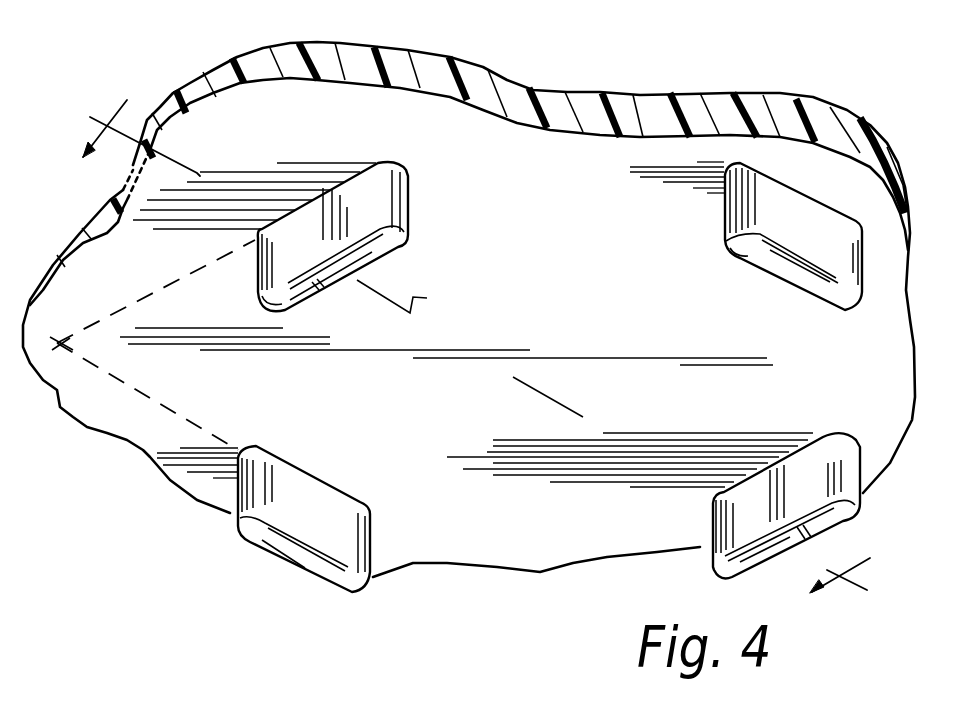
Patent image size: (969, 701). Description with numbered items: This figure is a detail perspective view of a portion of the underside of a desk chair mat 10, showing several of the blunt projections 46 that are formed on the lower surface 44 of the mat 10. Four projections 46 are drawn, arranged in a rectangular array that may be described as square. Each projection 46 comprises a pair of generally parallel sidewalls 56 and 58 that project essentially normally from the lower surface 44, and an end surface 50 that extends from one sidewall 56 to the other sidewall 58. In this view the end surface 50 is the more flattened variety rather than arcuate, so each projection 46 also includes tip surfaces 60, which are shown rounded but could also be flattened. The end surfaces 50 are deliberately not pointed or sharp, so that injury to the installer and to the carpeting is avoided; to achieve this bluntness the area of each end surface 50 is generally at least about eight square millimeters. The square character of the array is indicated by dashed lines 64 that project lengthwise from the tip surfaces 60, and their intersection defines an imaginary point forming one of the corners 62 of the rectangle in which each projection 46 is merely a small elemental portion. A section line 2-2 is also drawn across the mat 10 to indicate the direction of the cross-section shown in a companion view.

The section line 2 is at (491, 325).
The chair mat 10 is at (420, 588).
The lower surface 44 is at (547, 319).
The blunt projections 46 is at (410, 215).
The end surface 50 is at (311, 285).
The sidewall 56 is at (713, 222).
The sidewall 58 is at (792, 231).
The tip surfaces 60 is at (853, 453).
The corners 62 is at (57, 343).
The lines 64 is at (175, 287).